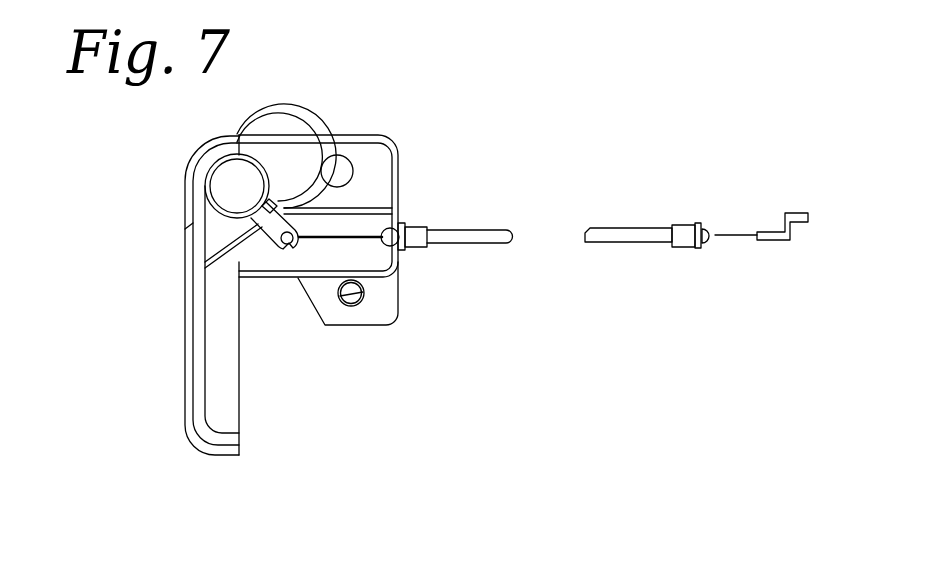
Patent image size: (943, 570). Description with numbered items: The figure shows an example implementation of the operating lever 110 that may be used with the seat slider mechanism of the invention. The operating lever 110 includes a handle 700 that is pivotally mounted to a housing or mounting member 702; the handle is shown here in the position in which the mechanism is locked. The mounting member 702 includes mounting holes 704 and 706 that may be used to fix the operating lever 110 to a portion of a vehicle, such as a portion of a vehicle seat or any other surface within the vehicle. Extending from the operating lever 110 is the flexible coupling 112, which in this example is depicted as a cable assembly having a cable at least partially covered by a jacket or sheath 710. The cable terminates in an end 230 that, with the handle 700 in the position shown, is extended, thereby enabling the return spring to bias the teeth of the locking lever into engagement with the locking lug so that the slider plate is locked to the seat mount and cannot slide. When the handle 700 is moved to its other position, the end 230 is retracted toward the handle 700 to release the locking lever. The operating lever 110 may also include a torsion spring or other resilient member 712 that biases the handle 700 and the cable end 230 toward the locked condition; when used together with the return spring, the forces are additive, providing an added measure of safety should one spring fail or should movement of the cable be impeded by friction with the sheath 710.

The operating lever 110 is at (348, 106).
The flexible coupling 112 is at (613, 218).
The end of the cable 230 is at (793, 213).
The handle 700 is at (232, 403).
The mounting member 702 is at (394, 142).
The mounting hole 704 is at (338, 165).
The mounting hole 706 is at (363, 298).
The sheath 710 is at (600, 243).
The torsion spring 712 is at (265, 167).